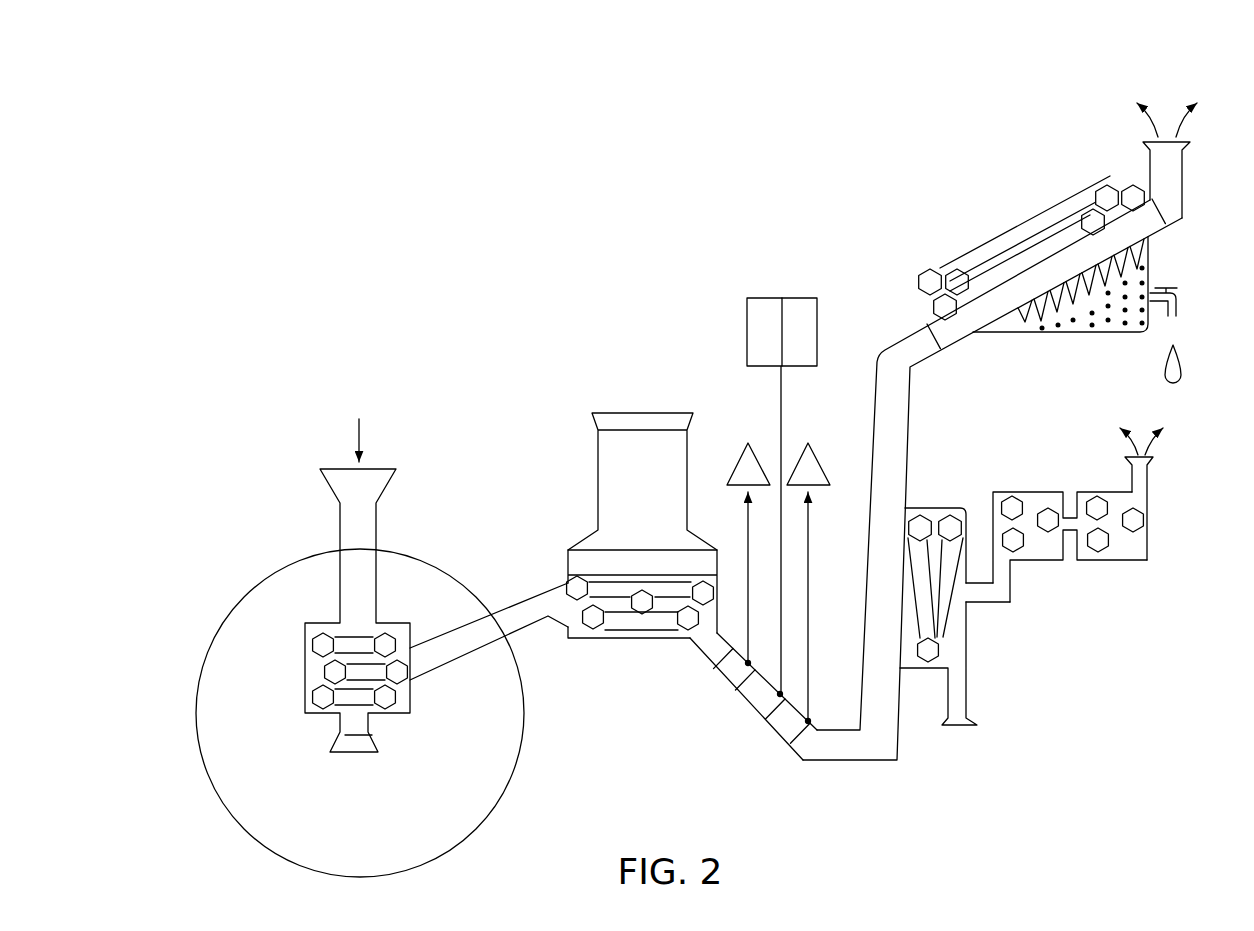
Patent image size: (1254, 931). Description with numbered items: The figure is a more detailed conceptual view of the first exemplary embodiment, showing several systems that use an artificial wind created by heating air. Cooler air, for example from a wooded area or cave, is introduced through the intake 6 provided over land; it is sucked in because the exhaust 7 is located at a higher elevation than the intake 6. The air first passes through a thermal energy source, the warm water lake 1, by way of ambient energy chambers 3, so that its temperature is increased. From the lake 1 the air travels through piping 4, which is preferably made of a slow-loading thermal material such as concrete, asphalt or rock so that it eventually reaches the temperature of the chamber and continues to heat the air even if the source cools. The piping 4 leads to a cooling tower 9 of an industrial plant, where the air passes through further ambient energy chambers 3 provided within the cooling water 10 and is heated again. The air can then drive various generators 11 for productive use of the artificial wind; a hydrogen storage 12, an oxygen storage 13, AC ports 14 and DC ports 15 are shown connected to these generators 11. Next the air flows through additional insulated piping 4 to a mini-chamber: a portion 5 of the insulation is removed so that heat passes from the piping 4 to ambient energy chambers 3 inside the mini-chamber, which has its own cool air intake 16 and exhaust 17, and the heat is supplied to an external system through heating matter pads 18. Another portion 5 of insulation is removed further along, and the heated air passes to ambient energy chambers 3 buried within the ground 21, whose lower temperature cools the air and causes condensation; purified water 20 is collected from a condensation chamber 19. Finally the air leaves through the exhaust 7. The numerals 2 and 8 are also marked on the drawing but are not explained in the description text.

The warm water lake 1 is at (443, 778).
The melting furnace 2 is at (418, 464).
The ambient energy chambers 3 is at (318, 645).
The piping 4 is at (488, 632).
The portion of the insulation 5 is at (898, 558).
The intake 6 is at (355, 436).
The exhaust 7 is at (1168, 92).
The melt outlet 8 is at (349, 773).
The cooling tower 9 is at (639, 493).
The cooling water 10 is at (640, 563).
The generators 11 is at (727, 670).
The hydrogen storage 12 is at (738, 482).
The oxygen storage 13 is at (798, 482).
The AC ports 14 is at (754, 346).
The DC ports 15 is at (788, 346).
The cool air intake 16 is at (965, 742).
The exhaust 17 is at (1163, 470).
The heating matter pads 18 is at (1047, 574).
The condensation chamber 19 is at (1050, 351).
The purified water 20 is at (1153, 378).
The ground 21 is at (923, 226).